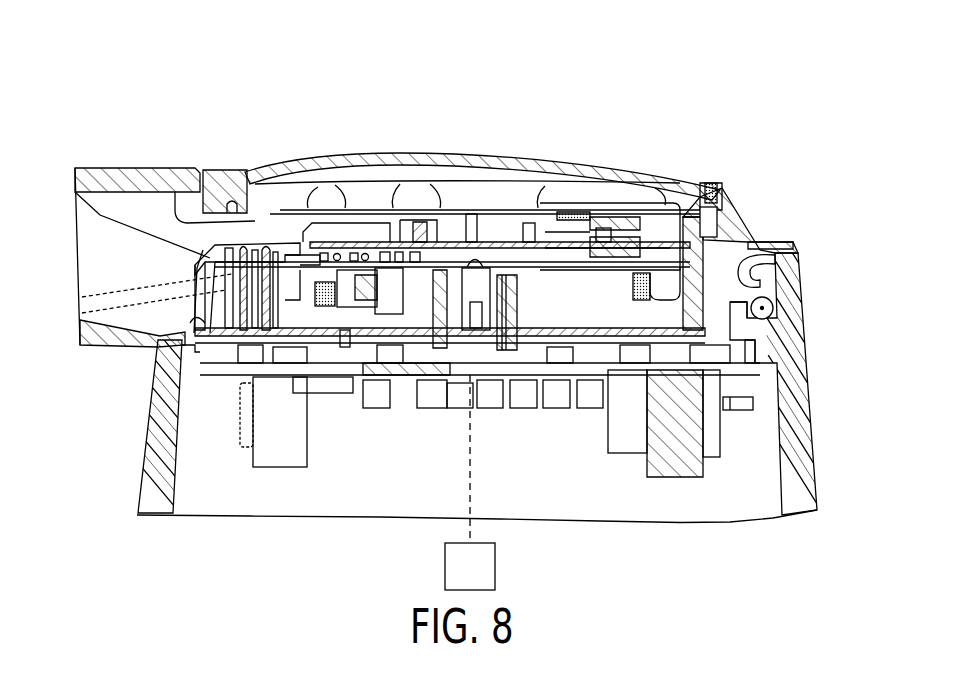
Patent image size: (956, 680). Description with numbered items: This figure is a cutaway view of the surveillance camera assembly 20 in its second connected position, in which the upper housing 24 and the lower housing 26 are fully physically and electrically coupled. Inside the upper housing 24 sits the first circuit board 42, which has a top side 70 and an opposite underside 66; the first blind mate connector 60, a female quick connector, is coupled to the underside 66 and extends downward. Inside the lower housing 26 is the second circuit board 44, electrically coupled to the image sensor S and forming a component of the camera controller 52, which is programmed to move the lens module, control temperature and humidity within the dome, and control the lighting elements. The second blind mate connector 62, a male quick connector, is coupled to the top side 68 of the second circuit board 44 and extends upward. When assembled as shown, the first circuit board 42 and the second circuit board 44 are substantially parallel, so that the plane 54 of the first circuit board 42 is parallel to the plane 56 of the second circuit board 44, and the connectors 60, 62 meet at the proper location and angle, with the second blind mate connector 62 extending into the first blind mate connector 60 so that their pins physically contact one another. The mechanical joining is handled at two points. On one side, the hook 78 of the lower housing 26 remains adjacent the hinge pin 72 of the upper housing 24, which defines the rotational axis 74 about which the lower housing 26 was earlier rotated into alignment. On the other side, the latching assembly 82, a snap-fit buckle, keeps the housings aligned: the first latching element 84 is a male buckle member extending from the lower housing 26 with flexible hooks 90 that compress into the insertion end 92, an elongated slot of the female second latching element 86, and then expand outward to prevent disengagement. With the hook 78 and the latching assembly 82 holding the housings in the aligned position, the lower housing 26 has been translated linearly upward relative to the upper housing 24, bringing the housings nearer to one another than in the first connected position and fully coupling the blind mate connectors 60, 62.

The surveillance camera assembly 20 is at (536, 82).
The upper housing 24 is at (376, 152).
The lower housing 26 is at (145, 452).
The first circuit board 42 is at (582, 250).
The second circuit board 44 is at (433, 392).
The camera controller 52 is at (538, 437).
The plane 54 is at (707, 237).
The plane 56 is at (287, 387).
The first blind mate connector 60 is at (500, 313).
The second blind mate connector 62 is at (410, 397).
The underside 66 is at (660, 285).
The top side 68 is at (250, 370).
The top side 70 is at (405, 255).
The hinge pin 72 is at (774, 310).
The rotational axis 74 is at (766, 312).
The hook 78 is at (793, 255).
The latching assembly 82 is at (140, 272).
The first latching element 84 is at (192, 323).
The second latching element 86 is at (238, 290).
The hooks 90 is at (256, 245).
The insertion end 92 is at (215, 262).